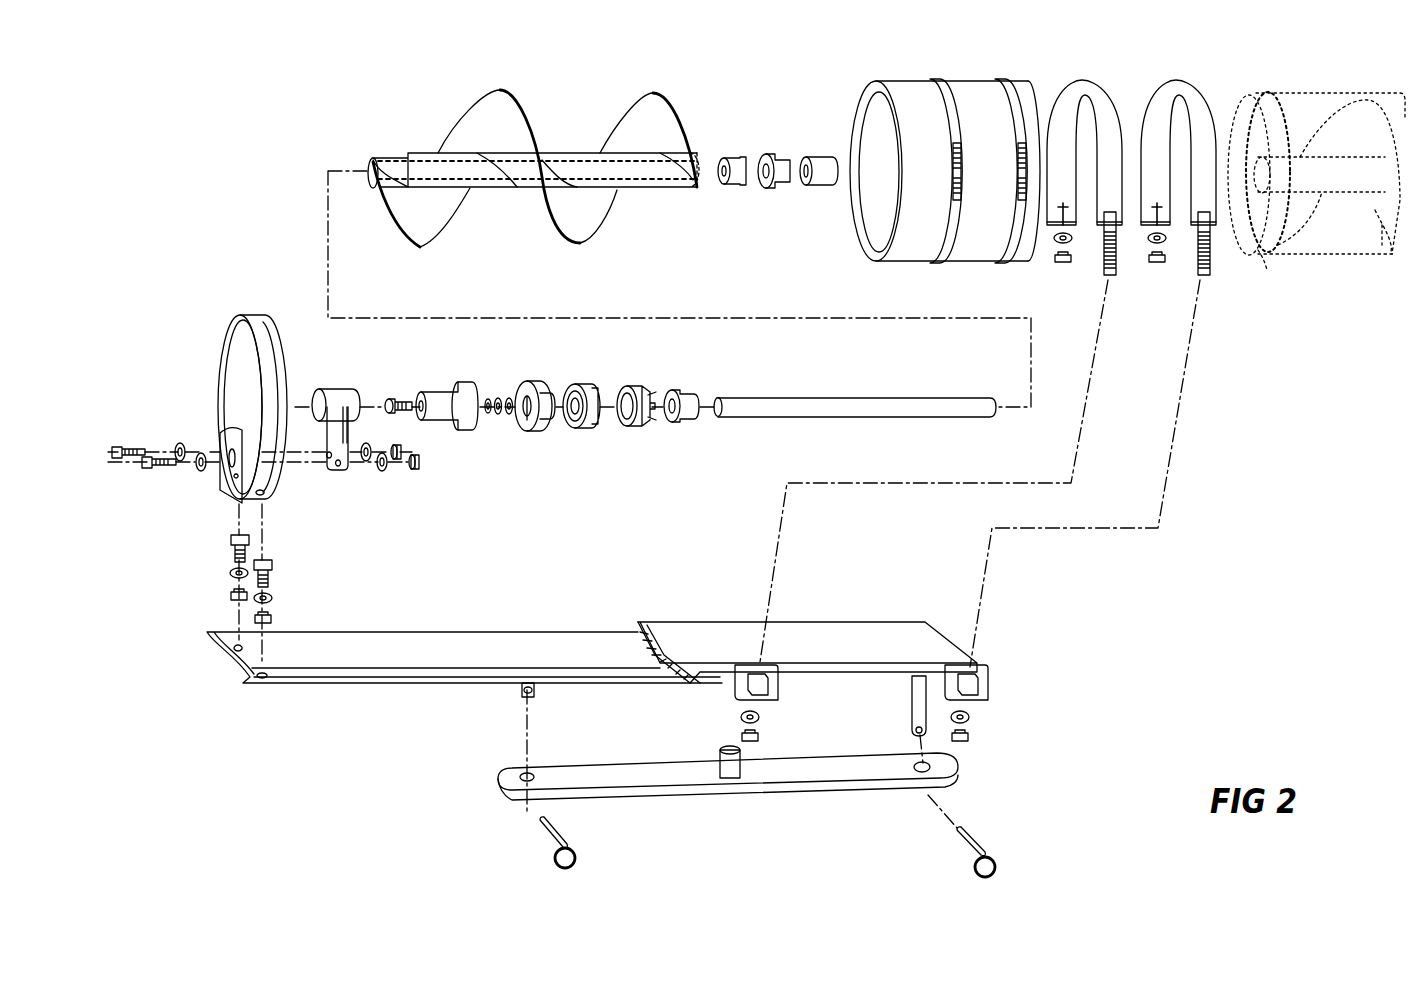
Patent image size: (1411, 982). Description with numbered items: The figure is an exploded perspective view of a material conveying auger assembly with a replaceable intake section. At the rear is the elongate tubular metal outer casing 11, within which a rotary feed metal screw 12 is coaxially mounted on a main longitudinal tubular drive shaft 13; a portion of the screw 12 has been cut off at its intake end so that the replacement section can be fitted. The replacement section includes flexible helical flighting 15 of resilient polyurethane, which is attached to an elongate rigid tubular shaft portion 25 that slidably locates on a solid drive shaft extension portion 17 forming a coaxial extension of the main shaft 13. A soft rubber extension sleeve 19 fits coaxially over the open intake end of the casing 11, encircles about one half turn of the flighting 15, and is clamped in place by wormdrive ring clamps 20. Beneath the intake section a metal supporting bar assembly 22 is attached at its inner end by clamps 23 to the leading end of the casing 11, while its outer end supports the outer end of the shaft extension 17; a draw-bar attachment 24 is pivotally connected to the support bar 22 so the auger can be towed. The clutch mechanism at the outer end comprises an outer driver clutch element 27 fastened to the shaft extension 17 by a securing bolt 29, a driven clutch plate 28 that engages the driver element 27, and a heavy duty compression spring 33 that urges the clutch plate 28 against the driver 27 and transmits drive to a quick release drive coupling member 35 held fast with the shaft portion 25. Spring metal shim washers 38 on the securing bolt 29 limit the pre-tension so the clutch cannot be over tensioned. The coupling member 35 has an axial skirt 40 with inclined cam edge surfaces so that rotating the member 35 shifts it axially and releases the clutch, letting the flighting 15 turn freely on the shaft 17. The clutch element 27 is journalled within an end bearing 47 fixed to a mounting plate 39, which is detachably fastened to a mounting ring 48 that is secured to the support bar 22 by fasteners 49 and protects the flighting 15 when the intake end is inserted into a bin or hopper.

The outer casing 11 is at (1318, 96).
The rotary feed metal screw 12 is at (1260, 262).
The main longitudinal tubular drive shaft 13 is at (1252, 96).
The flexible helical flighting 15 is at (660, 115).
The drive shaft extension portion 17 is at (823, 398).
The extension sleeve 19 is at (912, 232).
The wormdrive ring clamps 20 is at (1000, 80).
The supporting bar assembly 22 is at (566, 652).
The clamps 23 is at (1192, 97).
The draw-bar attachment 24 is at (800, 780).
The tubular sleeve or shaft portion 25 is at (600, 172).
The outer driver clutch element 27 is at (442, 412).
The driven clutch plate 28 is at (541, 430).
The securing bolt 29 is at (410, 400).
The compression spring 33 is at (588, 395).
The quick release drive coupling member 35 is at (641, 428).
The shim washers 38 is at (507, 398).
The mounting plate 39 is at (334, 472).
The axial skirt 40 is at (692, 397).
The end bearing 47 is at (340, 395).
The mounting ring 48 is at (255, 318).
The fasteners 49 is at (295, 566).